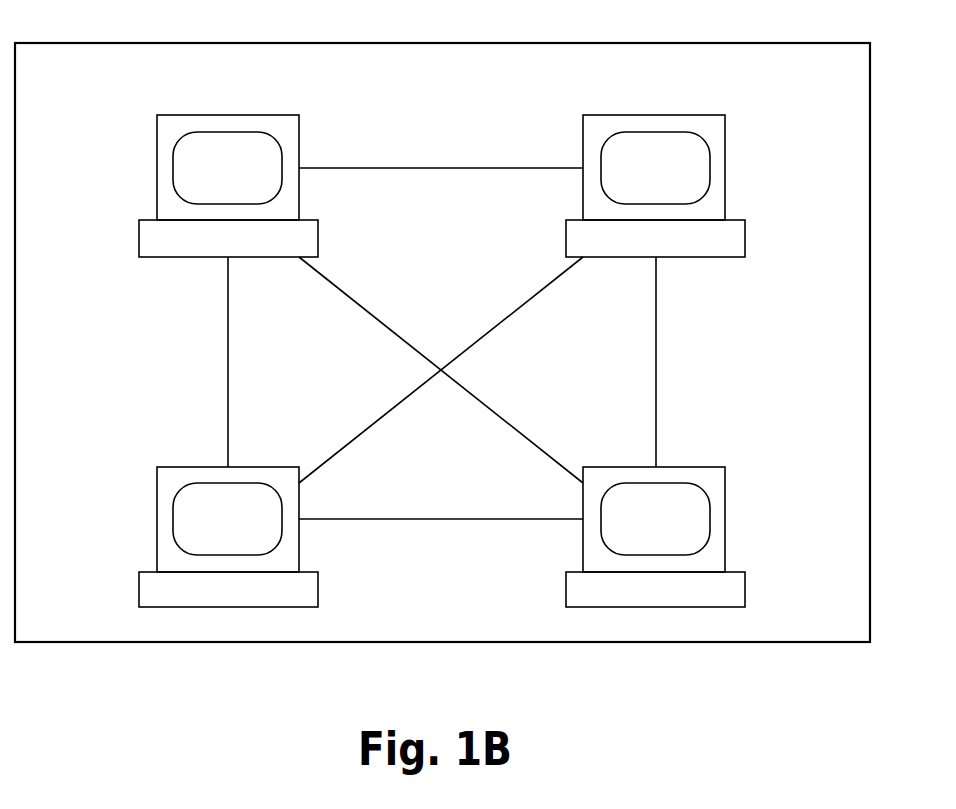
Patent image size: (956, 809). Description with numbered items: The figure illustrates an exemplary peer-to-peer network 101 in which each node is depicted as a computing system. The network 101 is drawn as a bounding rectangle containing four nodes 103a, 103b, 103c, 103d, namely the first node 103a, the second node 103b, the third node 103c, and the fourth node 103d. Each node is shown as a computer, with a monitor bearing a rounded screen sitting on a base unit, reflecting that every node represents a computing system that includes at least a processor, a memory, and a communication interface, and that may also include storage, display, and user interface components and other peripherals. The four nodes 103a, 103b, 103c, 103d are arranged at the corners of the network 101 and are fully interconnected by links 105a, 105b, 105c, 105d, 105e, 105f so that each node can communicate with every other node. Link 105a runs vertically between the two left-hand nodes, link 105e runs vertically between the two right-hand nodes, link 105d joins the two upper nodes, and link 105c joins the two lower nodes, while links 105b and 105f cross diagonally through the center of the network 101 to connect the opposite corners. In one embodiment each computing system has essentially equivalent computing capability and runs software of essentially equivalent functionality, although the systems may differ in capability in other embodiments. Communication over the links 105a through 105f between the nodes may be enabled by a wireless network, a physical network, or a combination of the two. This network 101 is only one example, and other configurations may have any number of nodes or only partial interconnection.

The P2P network 101 is at (515, 43).
The Node 1 103a is at (157, 483).
The Node 2 103b is at (727, 132).
The Node 3 103c is at (727, 483).
The Node 4 103d is at (157, 132).
The link 105a is at (228, 377).
The link 105b is at (377, 423).
The link 105c is at (458, 519).
The link 105d is at (425, 168).
The link 105e is at (656, 328).
The link 105f is at (363, 303).